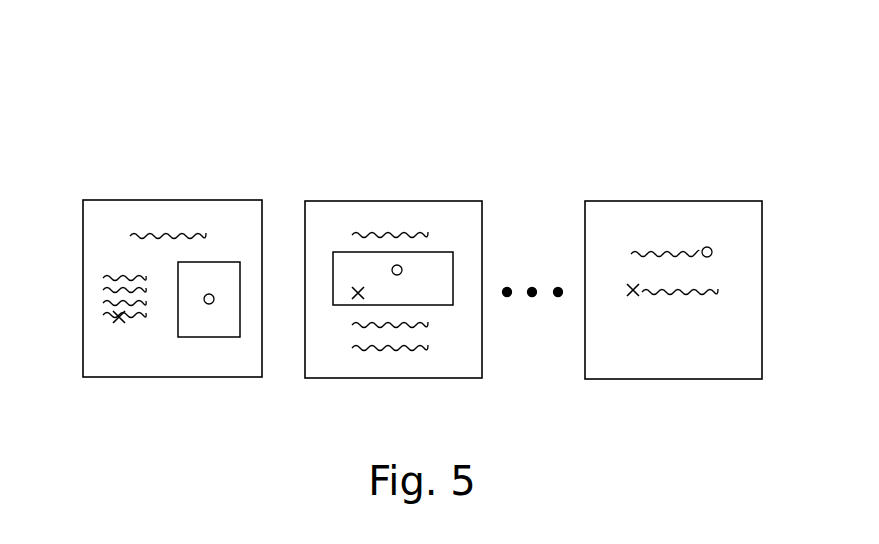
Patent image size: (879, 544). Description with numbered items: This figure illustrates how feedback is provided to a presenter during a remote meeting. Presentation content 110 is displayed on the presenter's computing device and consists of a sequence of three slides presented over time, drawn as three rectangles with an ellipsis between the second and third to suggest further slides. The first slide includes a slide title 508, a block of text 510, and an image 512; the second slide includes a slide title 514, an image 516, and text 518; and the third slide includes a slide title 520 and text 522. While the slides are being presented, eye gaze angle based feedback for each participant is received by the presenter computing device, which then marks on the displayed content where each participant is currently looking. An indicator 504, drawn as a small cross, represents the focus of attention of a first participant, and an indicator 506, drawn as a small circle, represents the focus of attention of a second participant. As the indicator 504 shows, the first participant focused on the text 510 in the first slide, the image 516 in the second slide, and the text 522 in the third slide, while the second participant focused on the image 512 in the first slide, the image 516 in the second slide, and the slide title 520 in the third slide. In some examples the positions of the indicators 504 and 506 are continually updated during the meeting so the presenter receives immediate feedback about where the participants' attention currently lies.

The presentation content 110 is at (162, 80).
The indicator 504 is at (119, 320).
The indicator 506 is at (207, 304).
The slide title 508 is at (131, 234).
The text 510 is at (101, 278).
The image 512 is at (240, 276).
The slide title 514 is at (352, 234).
The image 516 is at (454, 276).
The text 518 is at (390, 351).
The slide title 520 is at (632, 252).
The text 522 is at (704, 296).